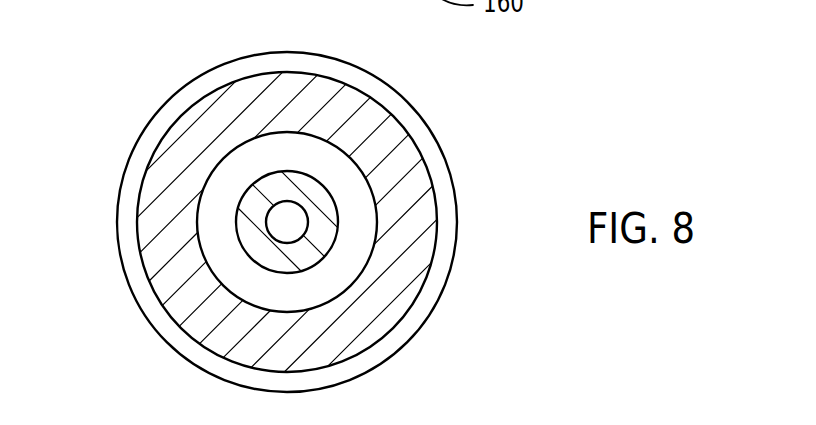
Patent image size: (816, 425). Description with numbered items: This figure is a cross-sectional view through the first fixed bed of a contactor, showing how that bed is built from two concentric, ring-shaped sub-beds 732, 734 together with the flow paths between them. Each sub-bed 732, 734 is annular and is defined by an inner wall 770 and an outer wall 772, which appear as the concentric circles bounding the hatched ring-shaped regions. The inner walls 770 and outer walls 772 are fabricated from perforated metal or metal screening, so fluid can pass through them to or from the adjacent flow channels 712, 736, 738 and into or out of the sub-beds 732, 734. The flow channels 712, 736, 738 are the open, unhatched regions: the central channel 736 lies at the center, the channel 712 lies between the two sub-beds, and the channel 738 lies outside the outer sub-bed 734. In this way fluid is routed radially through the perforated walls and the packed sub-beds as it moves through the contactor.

The flow channel 712 is at (352, 200).
The first upper sub-bed 732 is at (252, 229).
The second upper sub-bed 734 is at (380, 305).
The flow channel 736 is at (287, 220).
The flow channel 738 is at (171, 325).
The inner wall 770 is at (277, 198).
The outer wall 772 is at (412, 138).